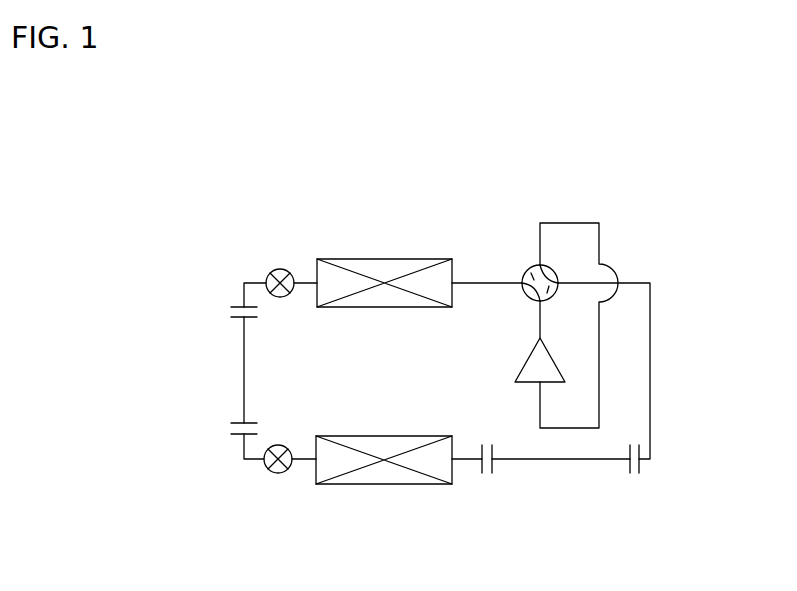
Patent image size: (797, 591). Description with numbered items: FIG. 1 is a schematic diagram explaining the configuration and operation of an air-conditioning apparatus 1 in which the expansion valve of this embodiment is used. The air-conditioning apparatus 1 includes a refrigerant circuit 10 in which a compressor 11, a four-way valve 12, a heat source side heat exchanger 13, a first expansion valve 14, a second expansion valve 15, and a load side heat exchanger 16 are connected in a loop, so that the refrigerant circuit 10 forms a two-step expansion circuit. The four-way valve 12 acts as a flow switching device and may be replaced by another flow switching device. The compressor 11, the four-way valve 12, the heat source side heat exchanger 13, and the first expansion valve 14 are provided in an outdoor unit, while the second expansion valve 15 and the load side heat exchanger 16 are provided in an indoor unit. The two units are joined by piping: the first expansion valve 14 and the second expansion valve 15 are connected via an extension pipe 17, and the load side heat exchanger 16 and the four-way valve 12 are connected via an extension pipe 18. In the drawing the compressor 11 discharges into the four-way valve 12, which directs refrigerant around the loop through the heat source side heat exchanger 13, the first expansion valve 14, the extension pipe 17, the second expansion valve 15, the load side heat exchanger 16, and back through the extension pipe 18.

The air-conditioning apparatus 1 is at (628, 218).
The refrigerant circuit 10 is at (634, 282).
The compressor 11 is at (540, 363).
The four-way valve 12 is at (532, 268).
The heat source side heat exchanger 13 is at (328, 277).
The first expansion valve 14 is at (267, 280).
The second expansion valve 15 is at (263, 463).
The load side heat exchanger 16 is at (410, 475).
The extension pipe 17 is at (242, 377).
The extension pipe 18 is at (575, 459).